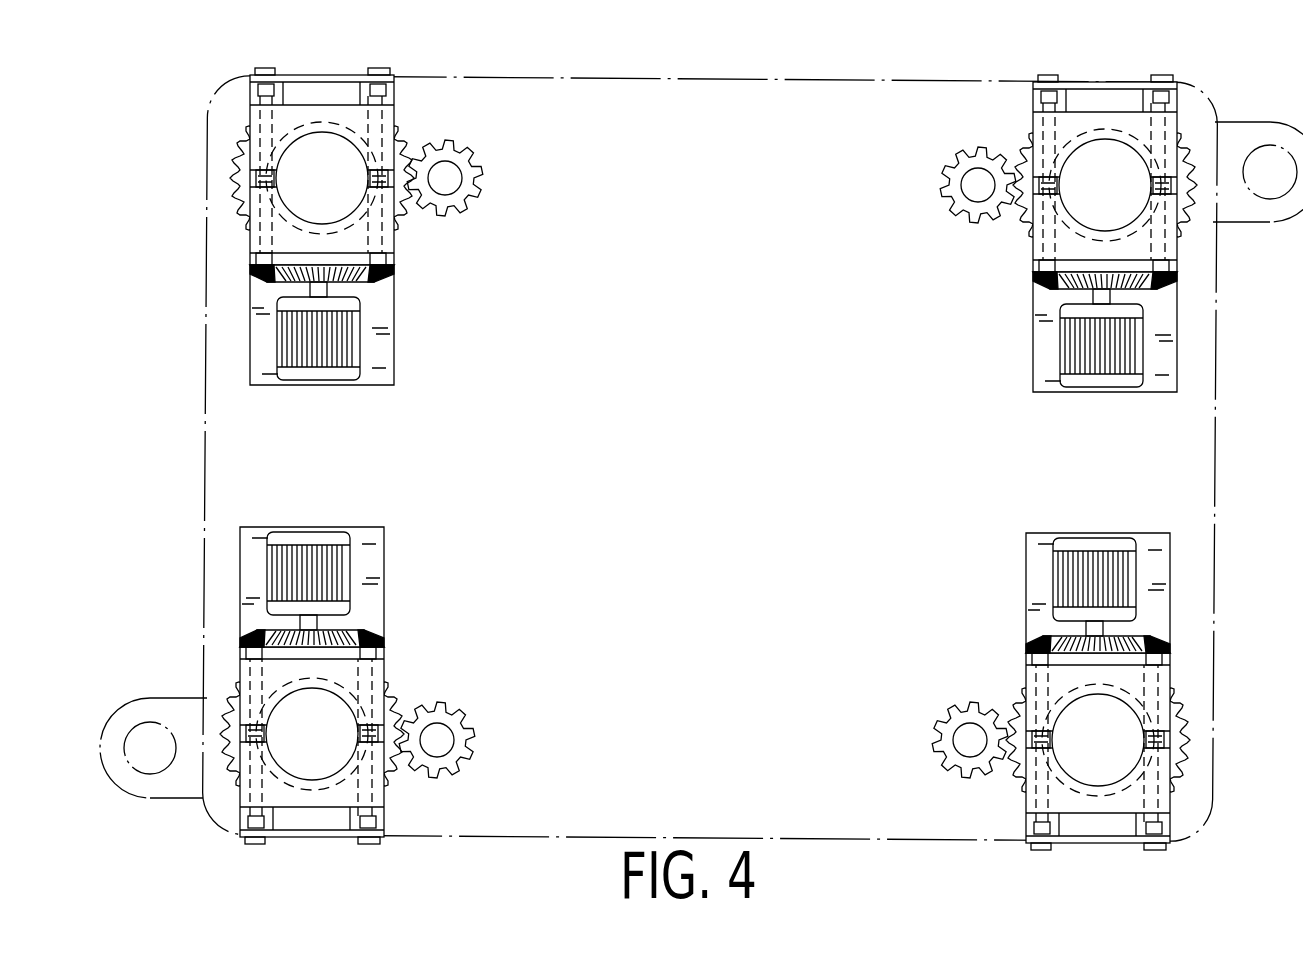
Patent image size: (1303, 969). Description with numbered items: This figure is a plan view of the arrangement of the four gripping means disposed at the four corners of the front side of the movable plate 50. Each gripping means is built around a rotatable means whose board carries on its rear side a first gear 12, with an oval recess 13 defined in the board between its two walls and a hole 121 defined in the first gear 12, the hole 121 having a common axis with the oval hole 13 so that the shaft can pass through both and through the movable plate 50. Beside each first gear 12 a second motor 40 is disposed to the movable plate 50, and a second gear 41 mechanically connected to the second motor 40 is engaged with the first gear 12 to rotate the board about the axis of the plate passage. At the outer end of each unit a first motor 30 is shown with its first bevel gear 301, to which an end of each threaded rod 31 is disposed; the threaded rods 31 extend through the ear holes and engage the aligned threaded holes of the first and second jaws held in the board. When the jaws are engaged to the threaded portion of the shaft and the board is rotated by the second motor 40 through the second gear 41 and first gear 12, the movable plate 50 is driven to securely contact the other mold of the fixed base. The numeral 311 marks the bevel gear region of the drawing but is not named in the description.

The movable plate 50 is at (700, 102).
The first gear 12 is at (1022, 165).
The oval recess 13 is at (1122, 104).
The hole 121 is at (1102, 131).
The first motor 30 is at (1070, 365).
The first bevel gear 301 is at (1068, 290).
The threaded rod 31 is at (1042, 240).
The bevel gear 311 is at (1037, 281).
The second motor 40 is at (957, 160).
The second gear 41 is at (950, 200).